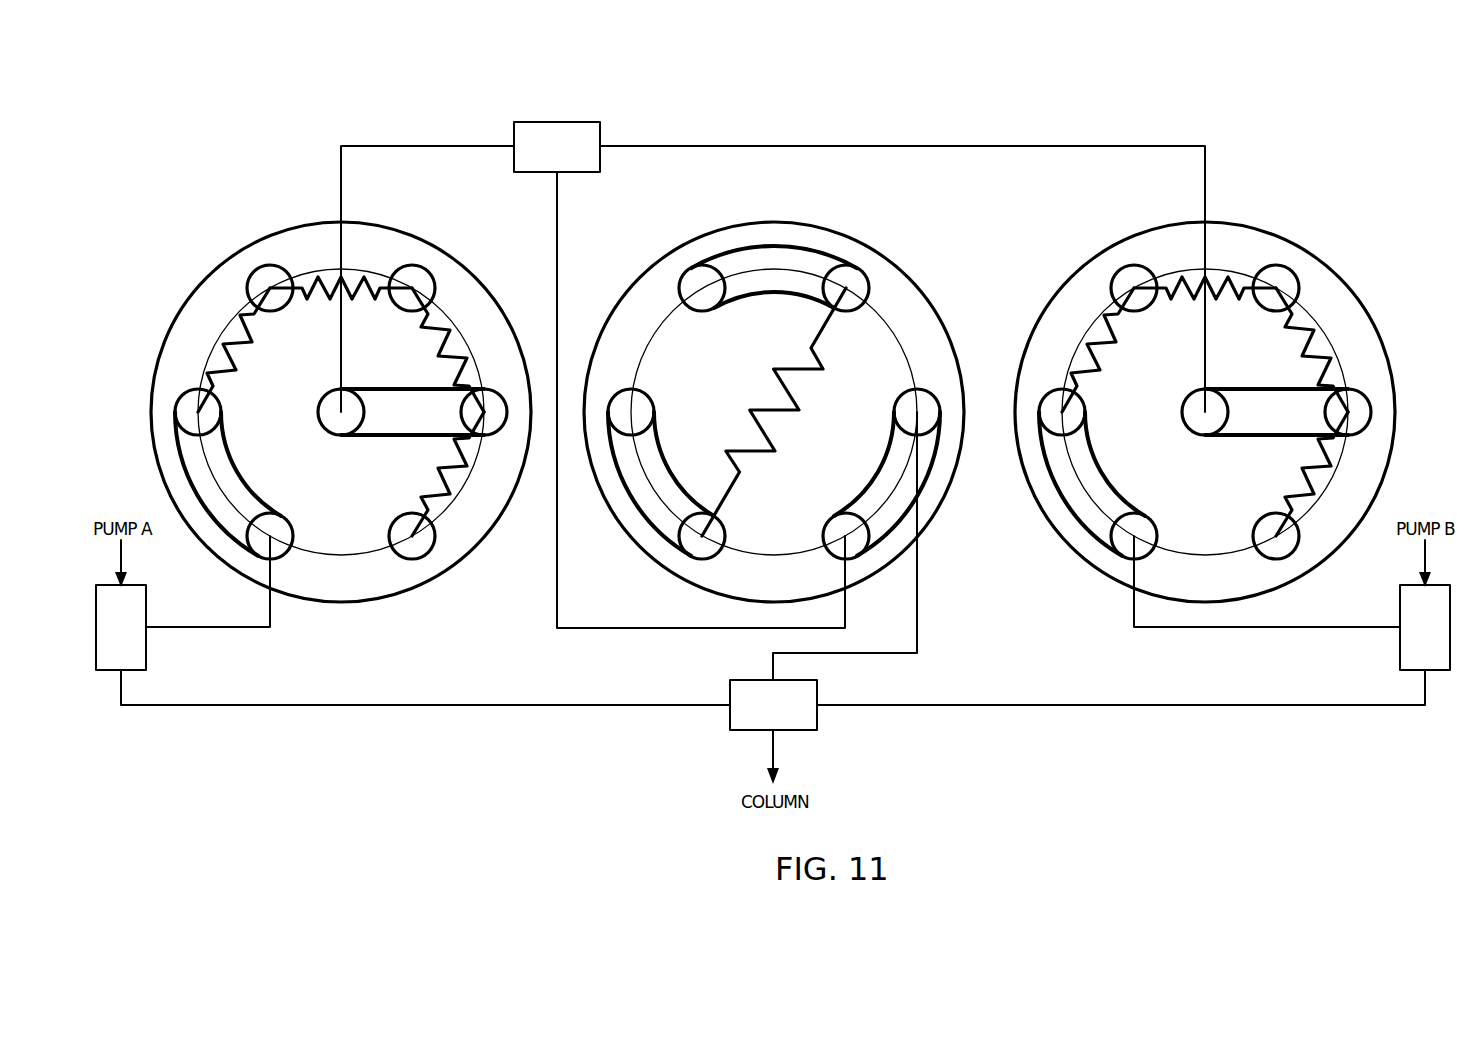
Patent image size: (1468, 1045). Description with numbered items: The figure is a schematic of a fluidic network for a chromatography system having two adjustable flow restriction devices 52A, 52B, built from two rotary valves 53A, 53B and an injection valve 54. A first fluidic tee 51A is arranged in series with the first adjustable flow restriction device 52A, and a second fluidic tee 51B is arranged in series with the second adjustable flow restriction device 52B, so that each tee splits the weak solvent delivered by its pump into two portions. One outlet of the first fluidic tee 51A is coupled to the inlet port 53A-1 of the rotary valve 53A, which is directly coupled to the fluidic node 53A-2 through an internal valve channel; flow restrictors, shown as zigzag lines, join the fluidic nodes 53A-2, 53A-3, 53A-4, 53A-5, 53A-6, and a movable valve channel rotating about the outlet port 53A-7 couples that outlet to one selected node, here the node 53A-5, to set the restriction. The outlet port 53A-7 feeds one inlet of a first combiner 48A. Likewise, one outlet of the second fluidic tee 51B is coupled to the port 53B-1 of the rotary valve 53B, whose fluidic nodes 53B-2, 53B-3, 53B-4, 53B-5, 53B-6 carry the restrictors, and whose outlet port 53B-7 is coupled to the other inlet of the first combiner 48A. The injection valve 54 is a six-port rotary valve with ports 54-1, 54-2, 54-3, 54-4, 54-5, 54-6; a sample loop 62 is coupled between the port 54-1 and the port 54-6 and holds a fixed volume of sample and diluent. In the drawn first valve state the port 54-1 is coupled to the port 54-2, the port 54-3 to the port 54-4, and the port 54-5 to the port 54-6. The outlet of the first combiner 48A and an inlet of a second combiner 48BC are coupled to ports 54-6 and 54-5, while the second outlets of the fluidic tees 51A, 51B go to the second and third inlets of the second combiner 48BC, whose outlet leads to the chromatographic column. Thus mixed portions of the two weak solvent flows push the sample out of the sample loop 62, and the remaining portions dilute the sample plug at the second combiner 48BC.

The first combiner 48A is at (560, 122).
The second combiner 48BC is at (730, 724).
The first fluidic tee 51A is at (146, 650).
The second fluidic tee 51B is at (1400, 648).
The adjustable flow restriction device 52A is at (190, 235).
The adjustable flow restriction device 52B is at (1272, 205).
The rotary valve 53A is at (170, 322).
The port 53A-1 is at (282, 514).
The fluidic node 53A-2 is at (175, 410).
The fluidic node 53A-3 is at (262, 266).
The fluidic node 53A-4 is at (414, 266).
The fluidic node 53A-5 is at (487, 390).
The fluidic node 53A-6 is at (422, 560).
The outlet port 53A-7 is at (326, 406).
The injection valve 54 is at (781, 222).
The port 54-1 is at (689, 560).
The port 54-2 is at (650, 396).
The port 54-3 is at (692, 266).
The port 54-4 is at (852, 266).
The port 54-5 is at (905, 396).
The port 54-6 is at (822, 536).
The sample loop 62 is at (800, 369).
The rotary valve 53B is at (1034, 322).
The port 53B-1 is at (1146, 514).
The fluidic node 53B-2 is at (1080, 428).
The fluidic node 53B-3 is at (1125, 266).
The fluidic node 53B-4 is at (1280, 266).
The fluidic node 53B-5 is at (1351, 390).
The fluidic node 53B-6 is at (1285, 560).
The outlet port 53B-7 is at (1190, 406).